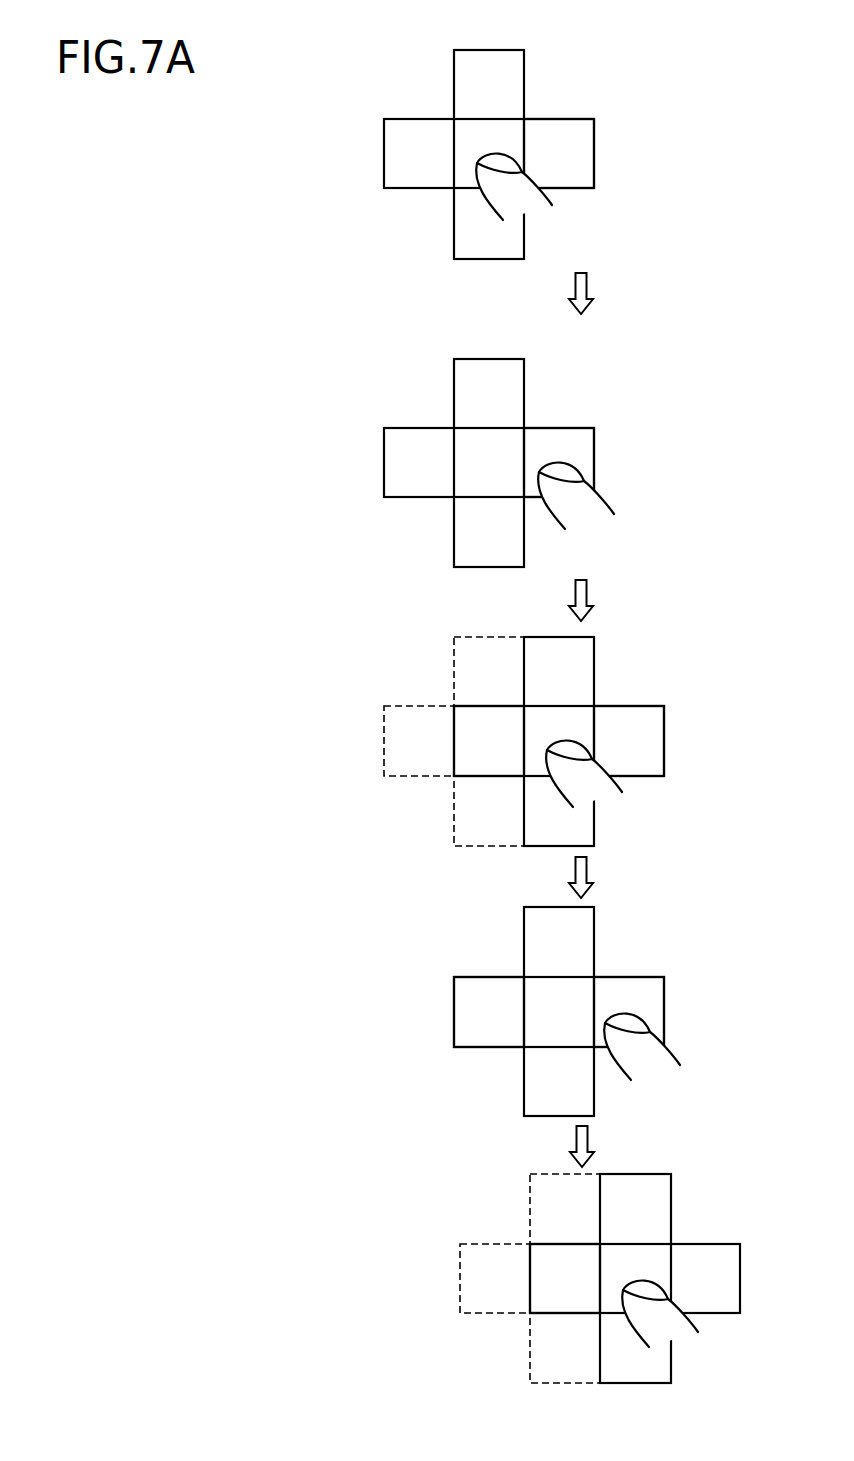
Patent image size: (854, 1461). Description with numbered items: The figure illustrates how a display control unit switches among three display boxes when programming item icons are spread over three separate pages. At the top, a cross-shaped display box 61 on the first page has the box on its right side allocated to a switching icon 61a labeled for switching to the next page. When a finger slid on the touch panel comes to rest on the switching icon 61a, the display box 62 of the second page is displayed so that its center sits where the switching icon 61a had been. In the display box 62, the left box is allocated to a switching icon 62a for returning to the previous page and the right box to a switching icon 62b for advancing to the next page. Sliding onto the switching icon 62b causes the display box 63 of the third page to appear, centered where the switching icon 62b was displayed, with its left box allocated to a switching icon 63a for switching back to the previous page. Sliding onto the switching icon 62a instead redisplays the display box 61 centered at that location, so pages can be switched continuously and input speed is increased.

The display box 61 is at (531, 296).
The switching icon 61a is at (594, 155).
The display box 62 is at (566, 864).
The switching icon 62a is at (470, 706).
The switching icon 62b is at (664, 743).
The display box 63 is at (605, 1266).
The switching icon 63a is at (548, 1244).